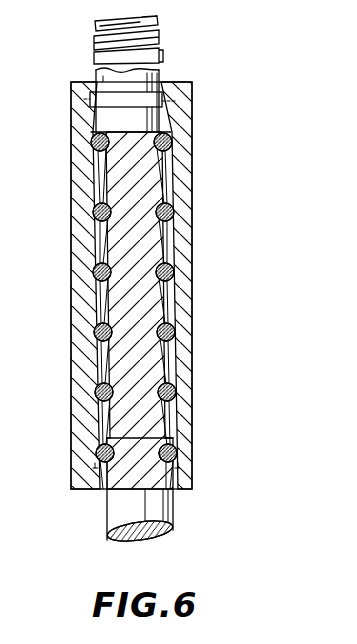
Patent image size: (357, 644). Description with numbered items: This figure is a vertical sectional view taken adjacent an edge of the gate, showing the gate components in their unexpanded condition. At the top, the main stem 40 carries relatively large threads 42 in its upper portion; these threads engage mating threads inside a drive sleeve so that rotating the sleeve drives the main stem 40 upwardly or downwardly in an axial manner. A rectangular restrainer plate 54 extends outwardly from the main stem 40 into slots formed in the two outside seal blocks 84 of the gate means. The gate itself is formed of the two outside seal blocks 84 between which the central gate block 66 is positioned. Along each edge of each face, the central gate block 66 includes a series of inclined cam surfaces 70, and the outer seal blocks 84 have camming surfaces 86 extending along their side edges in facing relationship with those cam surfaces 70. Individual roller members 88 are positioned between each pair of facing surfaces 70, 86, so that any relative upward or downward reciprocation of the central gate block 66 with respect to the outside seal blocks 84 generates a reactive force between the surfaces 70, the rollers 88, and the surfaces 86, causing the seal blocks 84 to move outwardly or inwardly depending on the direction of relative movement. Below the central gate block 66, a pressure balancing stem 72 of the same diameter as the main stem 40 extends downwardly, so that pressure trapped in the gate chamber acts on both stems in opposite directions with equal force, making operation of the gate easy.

The main stem 40 is at (160, 72).
The threads 42 is at (160, 33).
The rectangular restrainer plate 54 is at (110, 98).
The central gate block 66 is at (140, 190).
The inclined cam surfaces 70 is at (98, 400).
The pressure balancing stem 72 is at (152, 503).
The outside seal blocks 84 is at (85, 132).
The camming surfaces 86 is at (92, 120).
The roller members 88 is at (165, 358).